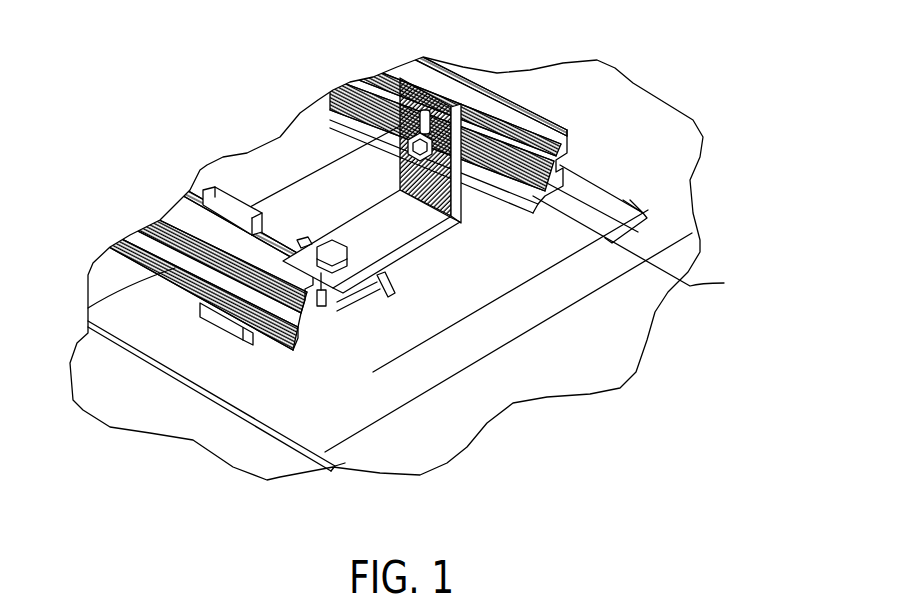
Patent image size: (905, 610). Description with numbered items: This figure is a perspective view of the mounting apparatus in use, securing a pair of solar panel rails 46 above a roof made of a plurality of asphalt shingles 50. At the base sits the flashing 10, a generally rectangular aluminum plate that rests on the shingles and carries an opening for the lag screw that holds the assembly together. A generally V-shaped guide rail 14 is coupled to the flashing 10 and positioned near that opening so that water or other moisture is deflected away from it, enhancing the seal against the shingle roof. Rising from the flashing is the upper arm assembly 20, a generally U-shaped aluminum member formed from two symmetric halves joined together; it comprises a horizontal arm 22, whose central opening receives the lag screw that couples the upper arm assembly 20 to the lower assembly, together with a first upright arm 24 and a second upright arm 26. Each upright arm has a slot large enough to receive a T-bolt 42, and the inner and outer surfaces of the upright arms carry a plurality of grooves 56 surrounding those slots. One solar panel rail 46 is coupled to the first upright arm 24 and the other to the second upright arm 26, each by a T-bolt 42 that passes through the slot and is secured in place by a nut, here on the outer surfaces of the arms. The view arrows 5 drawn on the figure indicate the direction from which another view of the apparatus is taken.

The section line 5- 5 is at (147, 366).
The flashing 10 is at (347, 360).
The guide rail 14 is at (334, 470).
The upper arm assembly 20 is at (442, 273).
The horizontal arm 22 is at (352, 238).
The first upright arm 24 is at (243, 341).
The second upright arm 26 is at (647, 322).
The T-bolt 42 is at (401, 123).
The solar panel rail 46 is at (88, 307).
The asphalt shingles 50 is at (397, 387).
The grooves 56 is at (406, 146).